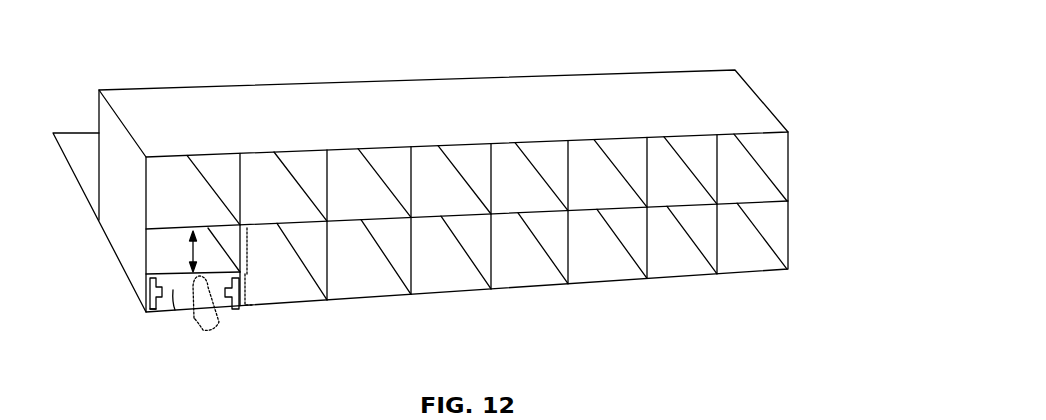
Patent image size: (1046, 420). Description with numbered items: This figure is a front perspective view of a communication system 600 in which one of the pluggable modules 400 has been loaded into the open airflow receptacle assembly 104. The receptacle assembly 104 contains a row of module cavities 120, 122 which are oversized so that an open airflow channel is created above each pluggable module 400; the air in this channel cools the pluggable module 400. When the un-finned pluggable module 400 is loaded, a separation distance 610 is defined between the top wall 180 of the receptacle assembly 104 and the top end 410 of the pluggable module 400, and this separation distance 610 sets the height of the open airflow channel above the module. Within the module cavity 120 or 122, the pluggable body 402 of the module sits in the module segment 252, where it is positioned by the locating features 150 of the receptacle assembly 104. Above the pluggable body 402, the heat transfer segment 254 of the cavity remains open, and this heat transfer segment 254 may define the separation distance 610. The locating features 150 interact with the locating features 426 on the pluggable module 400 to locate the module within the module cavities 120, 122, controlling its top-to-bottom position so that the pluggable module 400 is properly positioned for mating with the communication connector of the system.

The communication system 600 is at (370, 68).
The open airflow receptacle assembly 104 is at (285, 121).
The module cavity 122 is at (772, 155).
The module cavity 120 is at (777, 230).
The top wall 180 is at (176, 232).
The separation distance 610 is at (190, 249).
The top end 410 is at (172, 265).
The locating features 150 is at (150, 297).
The locating features 426 is at (163, 304).
The pluggable body 402 is at (173, 290).
The pluggable module 400 is at (218, 285).
The module segment 252 is at (253, 288).
The heat transfer segment 254 is at (252, 250).